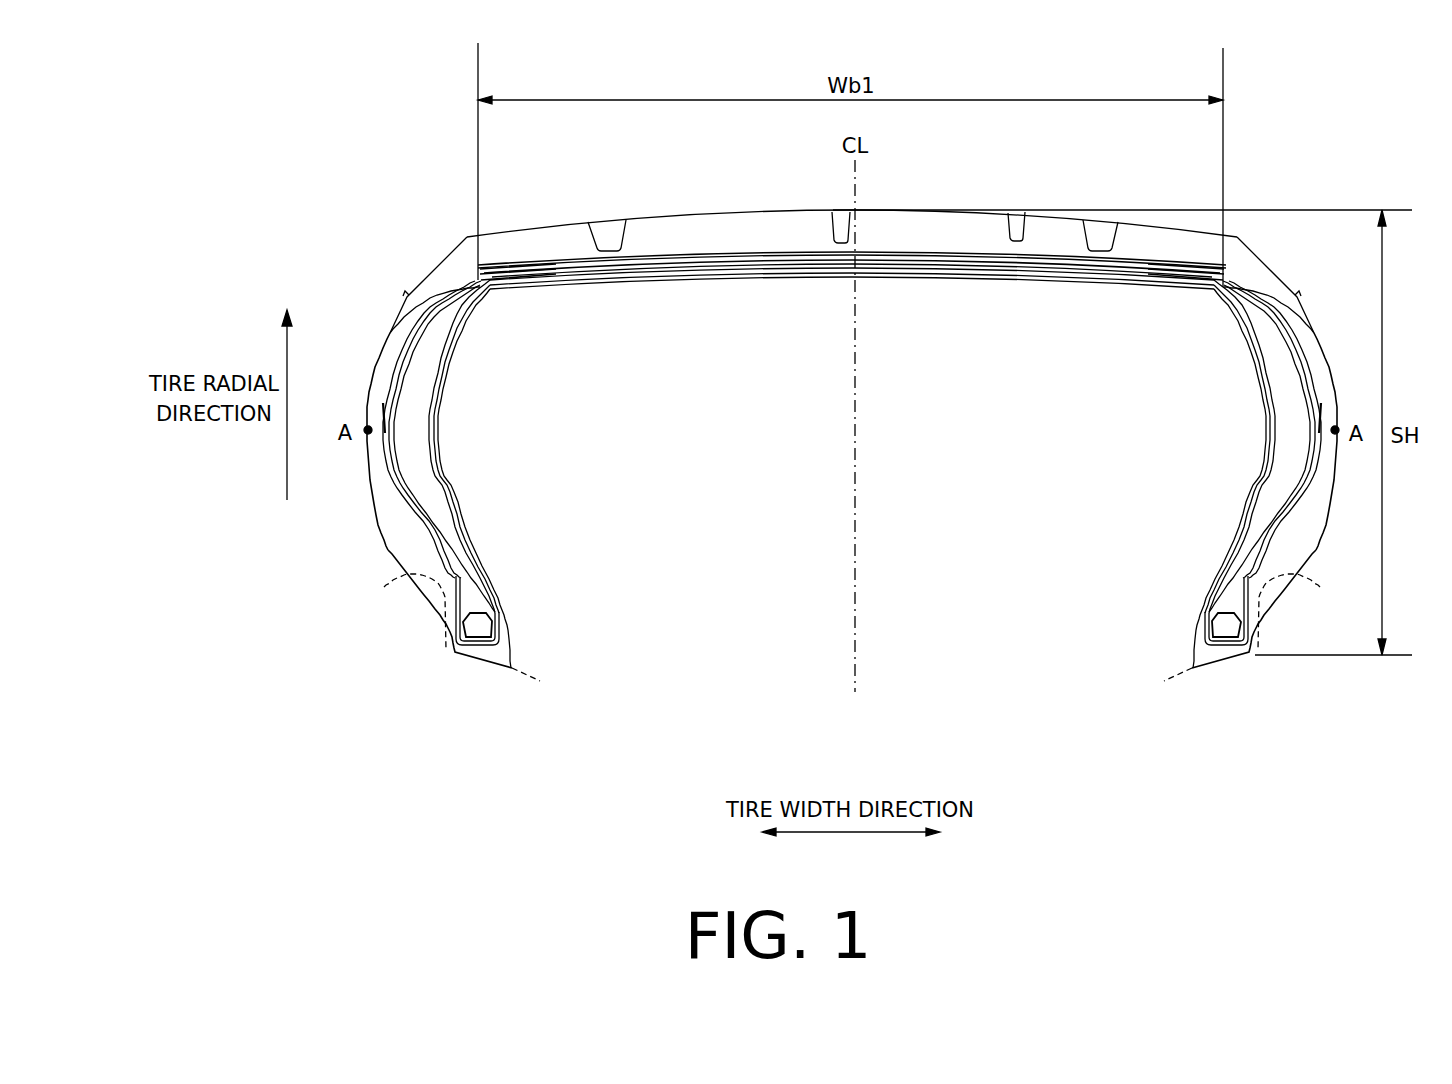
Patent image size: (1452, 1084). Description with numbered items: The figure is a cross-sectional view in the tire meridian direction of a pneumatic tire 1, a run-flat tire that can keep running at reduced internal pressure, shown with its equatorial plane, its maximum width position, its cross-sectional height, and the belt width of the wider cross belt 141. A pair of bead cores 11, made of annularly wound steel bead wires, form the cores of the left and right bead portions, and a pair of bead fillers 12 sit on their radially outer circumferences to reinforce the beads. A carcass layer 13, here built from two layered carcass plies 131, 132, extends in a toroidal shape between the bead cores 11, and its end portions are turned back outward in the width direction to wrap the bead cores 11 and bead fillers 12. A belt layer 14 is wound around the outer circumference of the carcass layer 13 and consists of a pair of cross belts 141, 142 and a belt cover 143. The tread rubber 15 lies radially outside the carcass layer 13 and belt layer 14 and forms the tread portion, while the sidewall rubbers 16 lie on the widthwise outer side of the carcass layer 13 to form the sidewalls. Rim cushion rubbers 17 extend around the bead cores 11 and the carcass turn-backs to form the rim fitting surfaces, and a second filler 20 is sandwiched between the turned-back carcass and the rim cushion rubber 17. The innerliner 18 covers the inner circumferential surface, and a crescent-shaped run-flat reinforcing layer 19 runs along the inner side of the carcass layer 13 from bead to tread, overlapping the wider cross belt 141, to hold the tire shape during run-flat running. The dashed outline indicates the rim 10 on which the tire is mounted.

The pneumatic tire 1 is at (1164, 195).
The rim 10 is at (1177, 677).
The bead core 11 is at (482, 630).
The bead filler 12 is at (477, 595).
The carcass layer 13 is at (1153, 375).
The carcass ply 131 is at (1223, 318).
The carcass ply 132 is at (1250, 313).
The belt layer 14 is at (1128, 334).
The cross belt 141 is at (1118, 286).
The cross belt 142 is at (1077, 282).
The belt cover 143 is at (1027, 276).
The tread rubber 15 is at (1249, 259).
The sidewall rubber 16 is at (382, 372).
The rim cushion rubber 17 is at (420, 550).
The innerliner 18 is at (1242, 527).
The run-flat reinforcing layer 19 is at (435, 473).
The second filler 20 is at (430, 538).